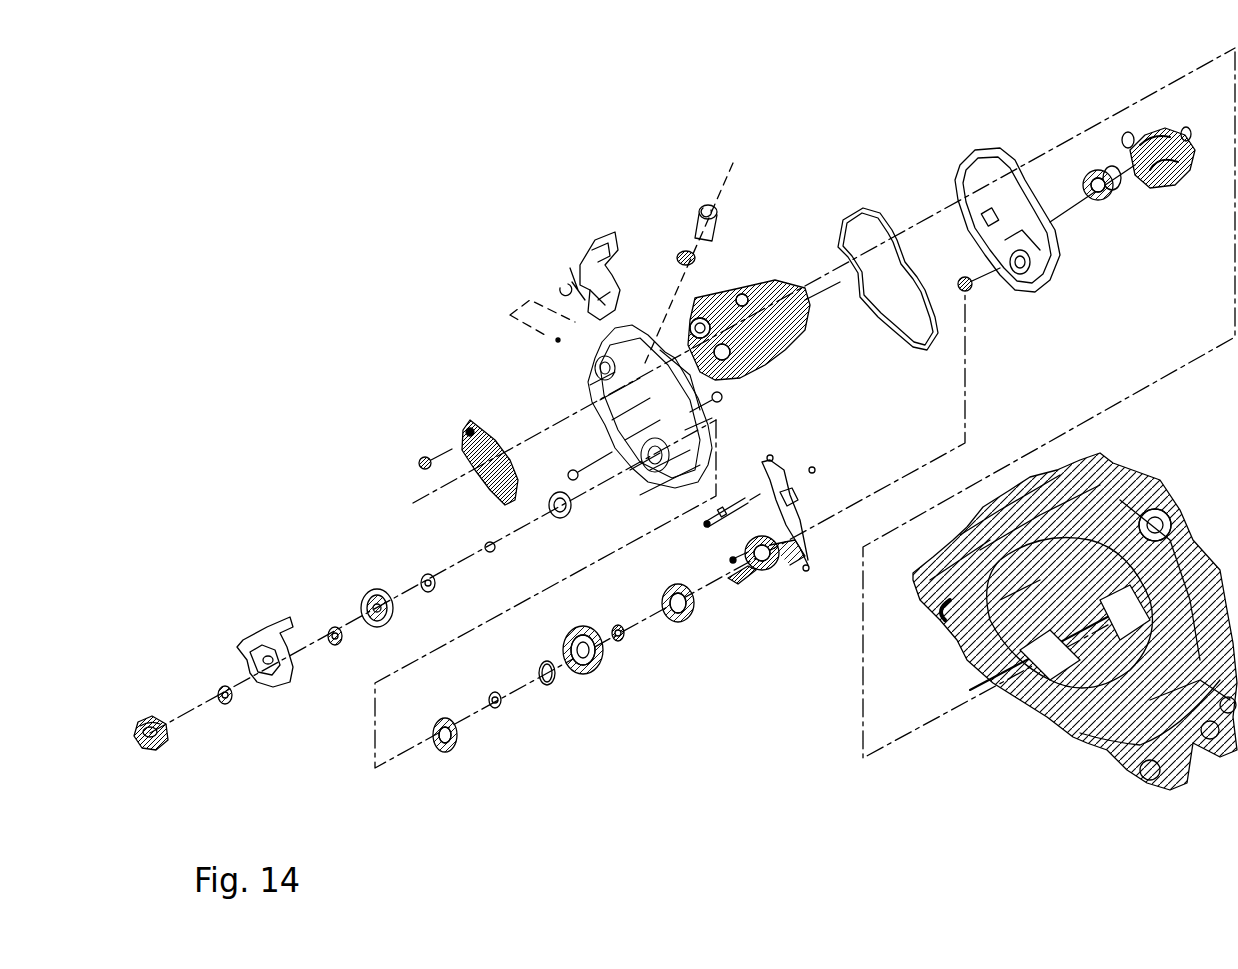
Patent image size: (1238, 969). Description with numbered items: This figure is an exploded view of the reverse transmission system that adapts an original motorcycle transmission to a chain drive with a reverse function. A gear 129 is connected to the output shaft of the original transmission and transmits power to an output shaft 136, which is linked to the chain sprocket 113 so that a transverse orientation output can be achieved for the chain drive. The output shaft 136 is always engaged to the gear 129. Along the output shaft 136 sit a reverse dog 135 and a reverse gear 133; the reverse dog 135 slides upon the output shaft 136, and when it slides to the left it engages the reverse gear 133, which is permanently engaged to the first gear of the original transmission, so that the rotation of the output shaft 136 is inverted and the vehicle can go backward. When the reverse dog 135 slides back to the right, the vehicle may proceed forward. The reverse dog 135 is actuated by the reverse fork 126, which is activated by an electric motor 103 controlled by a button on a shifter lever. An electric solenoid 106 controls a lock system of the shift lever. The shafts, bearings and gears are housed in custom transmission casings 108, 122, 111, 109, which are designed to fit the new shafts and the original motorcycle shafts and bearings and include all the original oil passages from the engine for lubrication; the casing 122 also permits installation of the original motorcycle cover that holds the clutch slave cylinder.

The electric motor 103 is at (583, 245).
The electric solenoid 106 is at (695, 230).
The custom transmission casing 108 is at (957, 158).
The custom transmission casing 109 is at (150, 722).
The custom transmission casing 111 is at (258, 640).
The chain sprocket 113 is at (367, 597).
The casing 122 is at (665, 483).
The reverse fork 126 is at (785, 480).
The gear 129 is at (1107, 193).
The reverse gear 133 is at (598, 673).
The reverse dog 135 is at (678, 617).
The output shaft 136 is at (732, 572).